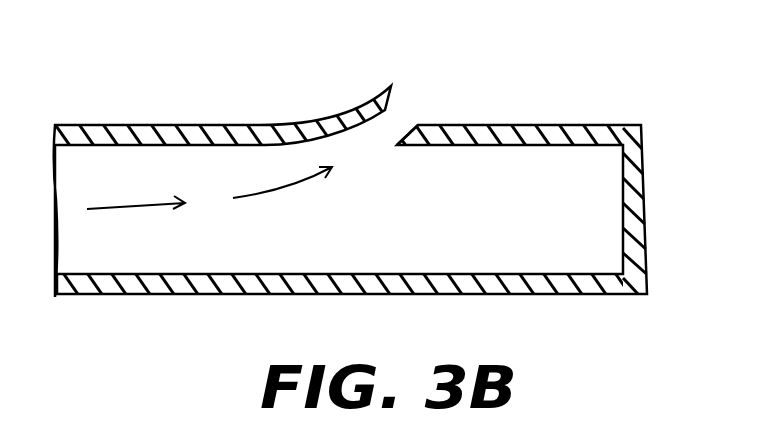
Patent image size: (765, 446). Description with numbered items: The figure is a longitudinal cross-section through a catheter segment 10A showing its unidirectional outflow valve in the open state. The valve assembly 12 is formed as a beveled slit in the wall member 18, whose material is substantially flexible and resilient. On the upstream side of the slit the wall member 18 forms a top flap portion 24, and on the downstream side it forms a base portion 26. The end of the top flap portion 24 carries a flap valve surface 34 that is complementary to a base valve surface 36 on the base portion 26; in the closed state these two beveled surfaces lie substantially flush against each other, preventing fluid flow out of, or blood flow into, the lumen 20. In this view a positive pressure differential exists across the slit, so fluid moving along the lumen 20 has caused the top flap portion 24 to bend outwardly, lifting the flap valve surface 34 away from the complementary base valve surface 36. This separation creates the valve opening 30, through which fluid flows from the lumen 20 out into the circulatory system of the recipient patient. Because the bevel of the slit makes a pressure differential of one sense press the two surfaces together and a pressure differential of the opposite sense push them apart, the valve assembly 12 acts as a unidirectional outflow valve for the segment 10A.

The segment 10A is at (172, 113).
The valve assembly 12 is at (453, 50).
The wall member 18 is at (541, 124).
The lumen 20 is at (541, 210).
The top flap portion 24 is at (380, 103).
The base portion 26 is at (413, 138).
The valve opening 30 is at (382, 132).
The flap valve surface 34 is at (392, 88).
The base valve surface 36 is at (402, 124).